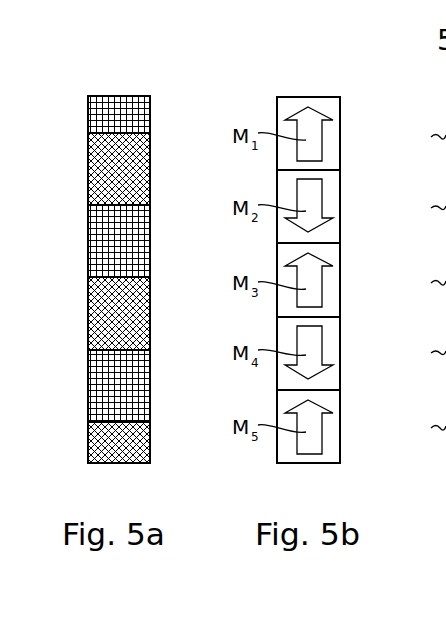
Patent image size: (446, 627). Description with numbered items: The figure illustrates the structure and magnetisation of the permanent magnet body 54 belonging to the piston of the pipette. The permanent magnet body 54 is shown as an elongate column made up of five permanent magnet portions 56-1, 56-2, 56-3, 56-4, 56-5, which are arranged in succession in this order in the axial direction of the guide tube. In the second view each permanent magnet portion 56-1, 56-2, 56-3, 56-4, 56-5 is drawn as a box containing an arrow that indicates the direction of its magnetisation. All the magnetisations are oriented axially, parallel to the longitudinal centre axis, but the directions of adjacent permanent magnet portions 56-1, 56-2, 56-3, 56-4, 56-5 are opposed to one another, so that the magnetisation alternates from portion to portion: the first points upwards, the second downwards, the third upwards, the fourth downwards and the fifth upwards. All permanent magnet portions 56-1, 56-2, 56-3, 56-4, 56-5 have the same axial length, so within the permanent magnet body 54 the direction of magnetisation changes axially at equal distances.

In FIG. 5A, the permanent magnet body 54 is at (88, 93).
In FIG. 5B, the permanent magnet body 54 is at (334, 238).
In FIG. 5B, the first permanent magnet portion 56-1 is at (330, 148).
In FIG. 5B, the second permanent magnet portion 56-2 is at (331, 207).
In FIG. 5B, the third permanent magnet portion 56-3 is at (330, 292).
In FIG. 5B, the fourth permanent magnet portion 56-4 is at (331, 342).
In FIG. 5B, the fifth permanent magnet portion 56-5 is at (331, 438).